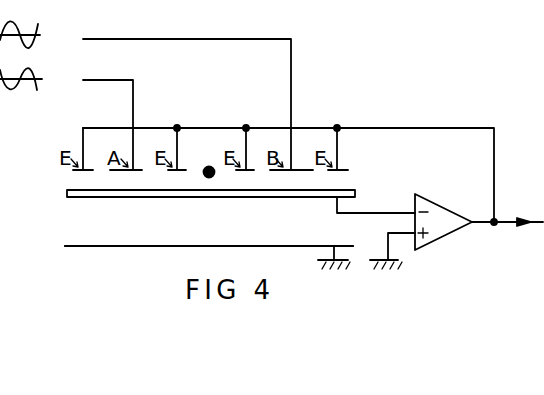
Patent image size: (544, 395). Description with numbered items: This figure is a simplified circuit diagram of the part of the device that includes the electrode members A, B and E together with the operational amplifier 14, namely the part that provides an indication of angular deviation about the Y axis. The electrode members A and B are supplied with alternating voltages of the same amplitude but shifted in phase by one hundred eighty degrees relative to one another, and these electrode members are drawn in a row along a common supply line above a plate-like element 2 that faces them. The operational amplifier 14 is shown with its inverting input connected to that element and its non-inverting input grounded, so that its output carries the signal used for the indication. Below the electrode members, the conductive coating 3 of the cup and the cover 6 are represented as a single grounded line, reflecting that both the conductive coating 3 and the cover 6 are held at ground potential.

The sensing plate / intermediate electrode 2 is at (97, 197).
The conductive coating 3 is at (177, 245).
The cover 6 is at (209, 263).
The operational amplifier 14 is at (432, 206).